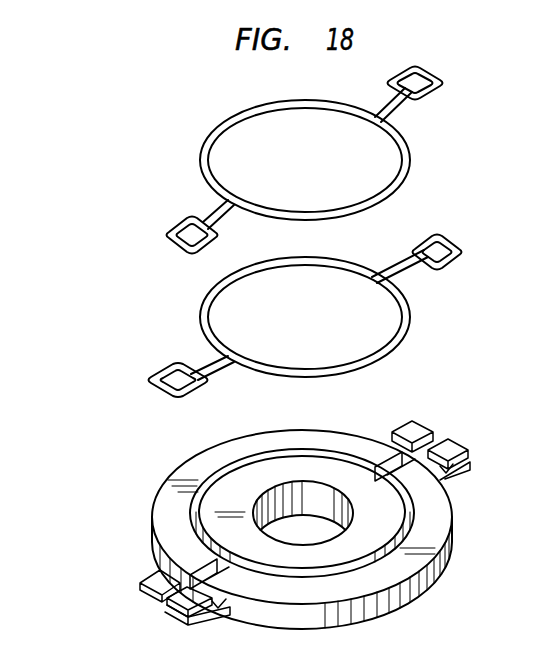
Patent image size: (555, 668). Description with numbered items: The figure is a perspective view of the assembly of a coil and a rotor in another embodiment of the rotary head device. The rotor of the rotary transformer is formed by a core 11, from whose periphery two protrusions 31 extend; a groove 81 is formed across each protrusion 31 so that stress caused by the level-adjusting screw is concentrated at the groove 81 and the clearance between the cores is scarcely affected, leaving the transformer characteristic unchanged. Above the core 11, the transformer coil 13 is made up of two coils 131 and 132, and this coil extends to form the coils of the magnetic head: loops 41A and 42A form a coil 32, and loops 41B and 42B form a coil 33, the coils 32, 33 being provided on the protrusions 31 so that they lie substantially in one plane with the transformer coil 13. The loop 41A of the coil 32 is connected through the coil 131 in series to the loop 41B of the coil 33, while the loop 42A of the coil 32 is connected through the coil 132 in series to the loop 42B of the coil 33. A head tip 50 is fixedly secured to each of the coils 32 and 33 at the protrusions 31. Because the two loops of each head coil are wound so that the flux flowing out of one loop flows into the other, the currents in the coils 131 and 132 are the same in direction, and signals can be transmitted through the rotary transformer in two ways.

The core 11 is at (452, 536).
The coil 13 is at (255, 164).
The coil 131 is at (216, 210).
The coil 132 is at (203, 166).
The protrusion 31 is at (205, 614).
The coil 32 is at (167, 307).
The coil 33 is at (457, 175).
The loop 41A is at (187, 364).
The loop 41B is at (436, 235).
The loop 42A is at (186, 242).
The loop 42B is at (421, 84).
The head tip 50 is at (165, 610).
The groove 81 is at (222, 606).